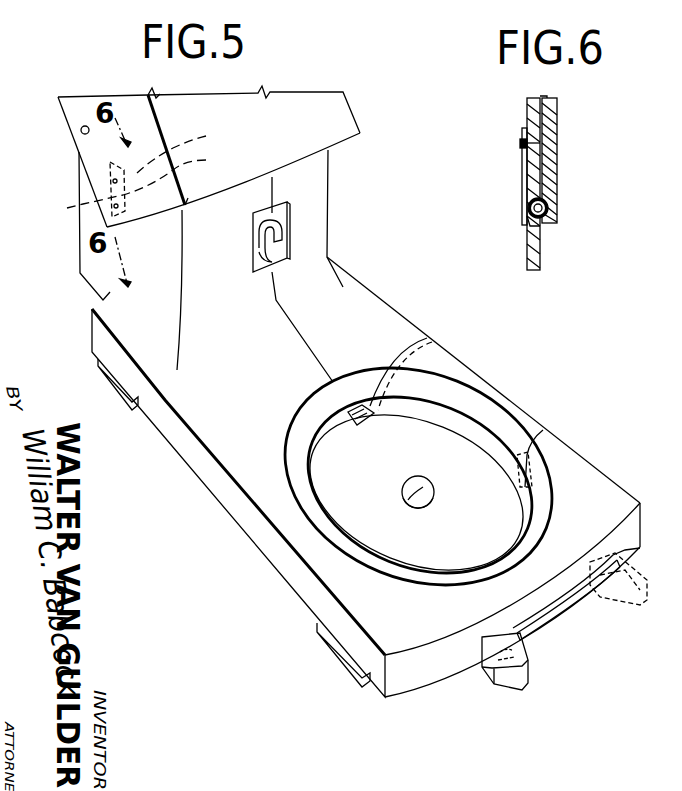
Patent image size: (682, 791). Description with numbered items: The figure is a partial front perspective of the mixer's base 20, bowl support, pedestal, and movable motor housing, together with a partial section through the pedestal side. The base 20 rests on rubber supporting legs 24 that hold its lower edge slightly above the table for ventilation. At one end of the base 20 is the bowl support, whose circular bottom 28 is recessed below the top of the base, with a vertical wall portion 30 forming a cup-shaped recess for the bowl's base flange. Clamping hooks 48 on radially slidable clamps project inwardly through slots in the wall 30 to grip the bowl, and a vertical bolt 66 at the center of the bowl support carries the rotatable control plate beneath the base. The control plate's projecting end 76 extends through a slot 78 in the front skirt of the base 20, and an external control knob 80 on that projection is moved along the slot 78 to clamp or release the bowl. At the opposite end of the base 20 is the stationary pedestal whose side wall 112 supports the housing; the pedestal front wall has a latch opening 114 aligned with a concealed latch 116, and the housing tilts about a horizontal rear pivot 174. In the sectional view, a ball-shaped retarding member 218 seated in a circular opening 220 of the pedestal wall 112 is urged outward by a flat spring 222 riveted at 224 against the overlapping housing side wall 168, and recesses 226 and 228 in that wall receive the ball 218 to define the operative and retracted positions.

In FIG. 5, the base 20 is at (337, 308).
In FIG. 5, the supporting legs 24 is at (348, 658).
In FIG. 5, the bowl support bottom surface 28 is at (508, 513).
In FIG. 5, the vertical wall portion 30 is at (473, 420).
In FIG. 5, the clamping hook 48 is at (427, 338).
In FIG. 5, the vertical bolt 66 is at (403, 502).
In FIG. 5, the projecting end 76 is at (517, 633).
In FIG. 5, the slot 78 is at (567, 613).
In FIG. 5, the control knob 80 is at (493, 677).
In FIG. 5, the side wall 112 is at (90, 257).
In FIG. 6, the side wall 112 is at (542, 255).
In FIG. 5, the latch opening 114 is at (288, 208).
In FIG. 5, the latch 116 is at (262, 234).
In FIG. 5, the side wall 168 is at (340, 125).
In FIG. 6, the side wall 168 is at (552, 180).
In FIG. 5, the pivot 174 is at (82, 133).
In FIG. 6, the retarding member 218 is at (530, 209).
In FIG. 6, the circular opening 220 is at (535, 221).
In FIG. 5, the flat spring 222 is at (85, 203).
In FIG. 6, the flat spring 222 is at (528, 181).
In FIG. 6, the rivet 224 is at (523, 143).
In FIG. 5, the recess 226 is at (153, 179).
In FIG. 5, the recess 228 is at (187, 150).